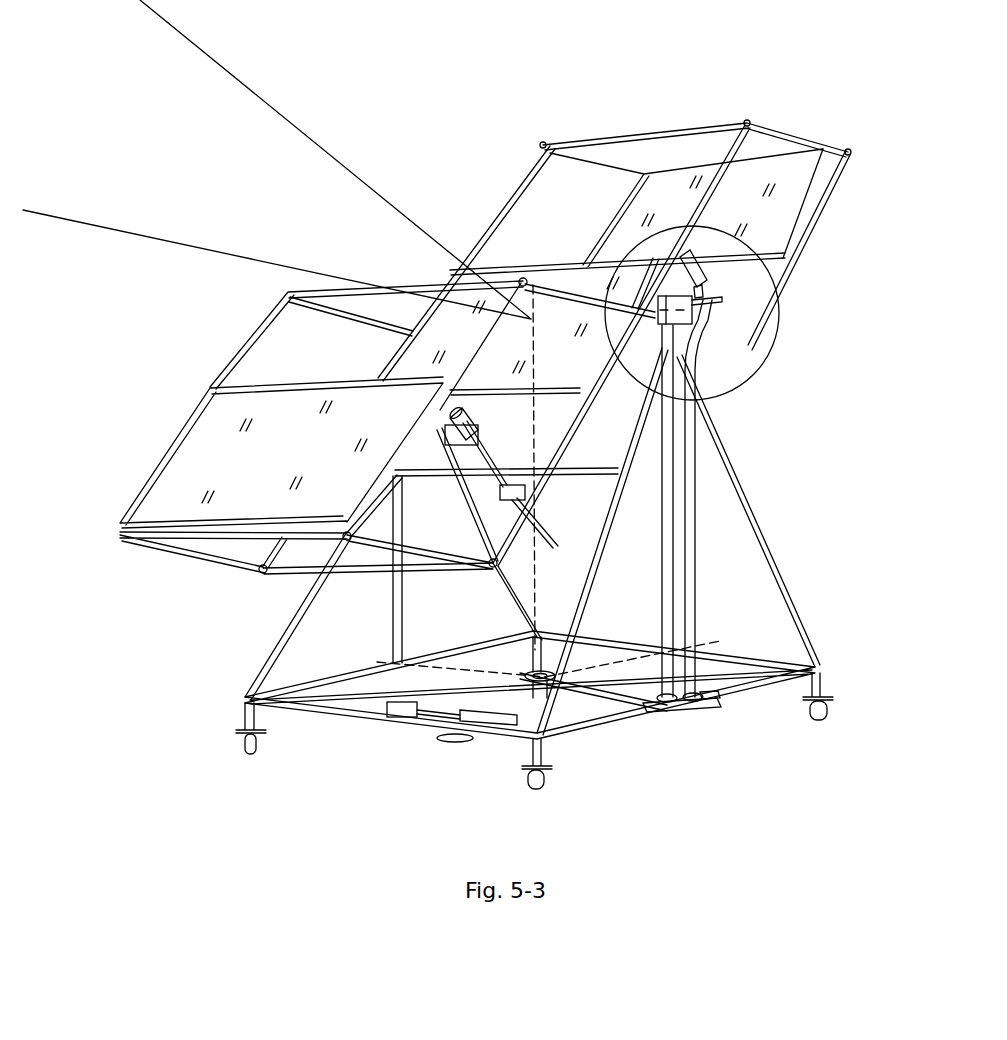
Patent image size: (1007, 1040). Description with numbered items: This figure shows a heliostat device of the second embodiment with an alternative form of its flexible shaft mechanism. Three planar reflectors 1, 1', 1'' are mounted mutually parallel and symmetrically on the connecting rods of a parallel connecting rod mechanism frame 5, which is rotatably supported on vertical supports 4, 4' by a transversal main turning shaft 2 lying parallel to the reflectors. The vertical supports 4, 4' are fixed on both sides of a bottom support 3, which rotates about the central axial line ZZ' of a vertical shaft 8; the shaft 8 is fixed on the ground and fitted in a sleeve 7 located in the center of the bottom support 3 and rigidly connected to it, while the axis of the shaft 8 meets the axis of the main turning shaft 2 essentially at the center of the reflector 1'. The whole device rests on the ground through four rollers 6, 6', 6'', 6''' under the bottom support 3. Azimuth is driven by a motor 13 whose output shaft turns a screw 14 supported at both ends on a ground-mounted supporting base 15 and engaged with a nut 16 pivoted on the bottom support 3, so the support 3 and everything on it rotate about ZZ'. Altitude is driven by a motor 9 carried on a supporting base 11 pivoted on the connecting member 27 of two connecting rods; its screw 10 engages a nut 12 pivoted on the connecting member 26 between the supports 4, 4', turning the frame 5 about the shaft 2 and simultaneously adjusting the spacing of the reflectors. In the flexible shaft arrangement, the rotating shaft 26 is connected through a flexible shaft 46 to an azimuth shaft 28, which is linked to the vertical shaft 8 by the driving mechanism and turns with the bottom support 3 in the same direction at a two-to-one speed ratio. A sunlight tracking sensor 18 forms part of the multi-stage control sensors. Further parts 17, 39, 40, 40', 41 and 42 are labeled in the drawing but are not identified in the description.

The planar reflector 1 is at (277, 452).
The planar reflector 1' is at (587, 391).
The planar reflector 1'' is at (725, 232).
The transversal main turning shaft 2 is at (552, 336).
The bottom support 3 is at (583, 723).
The vertical support 4 is at (417, 569).
The vertical support 4' is at (650, 511).
The parallel connecting rod mechanism frame 5 is at (680, 132).
The roller 6 is at (240, 739).
The roller 6' is at (548, 772).
The roller 6'' is at (835, 696).
The roller 6''' is at (577, 637).
The sleeve 7 is at (523, 700).
The vertical shaft 8 is at (528, 670).
The motor 9 is at (455, 418).
The screw 10 is at (480, 455).
The supporting base 11 is at (460, 440).
The nut 12 is at (517, 490).
The motor 13 is at (388, 708).
The screw 14 is at (490, 728).
The supporting base 15 is at (395, 715).
The nut 16 is at (443, 723).
The clamp block 17 is at (640, 252).
The sunlight tracking sensor 18 is at (692, 253).
The connecting member 26 is at (570, 472).
The connecting member 27 is at (502, 427).
The azimuth shaft 28 is at (722, 703).
The connecting bar 39 is at (605, 688).
The post foot 40 is at (670, 724).
The post foot 40' is at (702, 738).
The fastener 41 is at (702, 708).
The diagonal brace 42 is at (540, 668).
The flexible shaft 46 is at (703, 365).
The central axial line ZZ' Z' is at (547, 606).